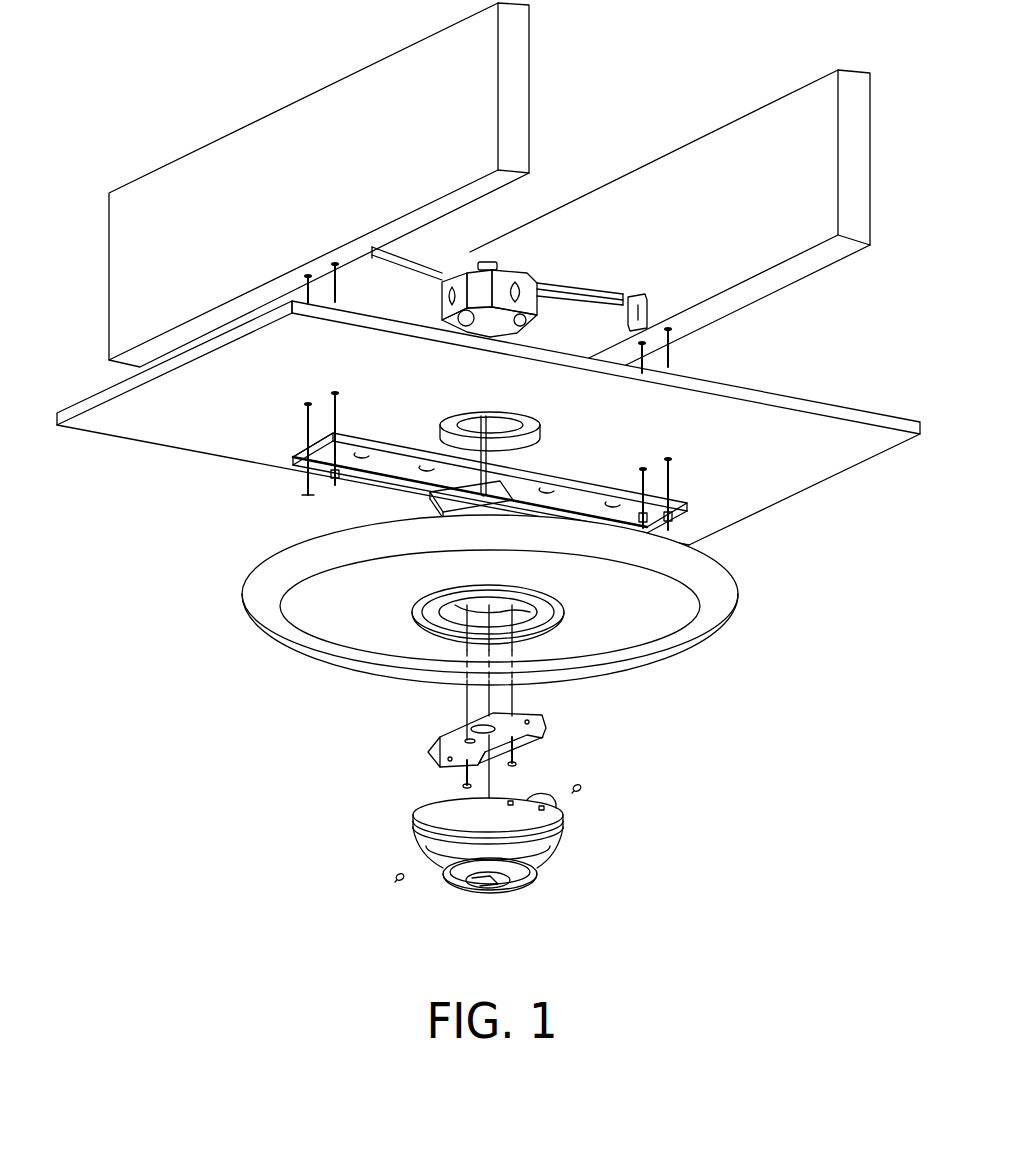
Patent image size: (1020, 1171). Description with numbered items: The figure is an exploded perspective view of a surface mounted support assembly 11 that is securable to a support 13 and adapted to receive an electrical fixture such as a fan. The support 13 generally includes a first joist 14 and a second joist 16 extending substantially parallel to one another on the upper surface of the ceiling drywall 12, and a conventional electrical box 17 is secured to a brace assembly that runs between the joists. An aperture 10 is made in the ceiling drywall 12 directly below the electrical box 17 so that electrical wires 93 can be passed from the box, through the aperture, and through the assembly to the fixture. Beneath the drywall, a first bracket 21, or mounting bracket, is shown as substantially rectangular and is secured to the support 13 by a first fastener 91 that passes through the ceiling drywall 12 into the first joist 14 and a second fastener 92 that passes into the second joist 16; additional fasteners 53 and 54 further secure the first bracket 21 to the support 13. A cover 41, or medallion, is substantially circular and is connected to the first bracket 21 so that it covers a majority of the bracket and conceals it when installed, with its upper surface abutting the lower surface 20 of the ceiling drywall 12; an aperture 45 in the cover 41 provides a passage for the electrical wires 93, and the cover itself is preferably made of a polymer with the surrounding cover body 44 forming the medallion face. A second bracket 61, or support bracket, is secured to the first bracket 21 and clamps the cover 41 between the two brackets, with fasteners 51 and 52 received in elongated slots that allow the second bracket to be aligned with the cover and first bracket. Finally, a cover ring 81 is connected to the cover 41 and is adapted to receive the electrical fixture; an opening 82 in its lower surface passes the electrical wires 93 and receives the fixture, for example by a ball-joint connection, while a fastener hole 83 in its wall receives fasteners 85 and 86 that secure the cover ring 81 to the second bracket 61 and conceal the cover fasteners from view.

The aperture 10 is at (527, 413).
The surface mounted support assembly 11 is at (264, 756).
The ceiling drywall 12 is at (851, 398).
The support 13 is at (730, 348).
The first joist 14 is at (530, 67).
The second joist 16 is at (750, 110).
The electrical box 17 is at (422, 298).
The lower surface 20 is at (807, 468).
The first bracket 21 is at (291, 444).
The cover 41 is at (528, 613).
The trim ring 44 is at (692, 640).
The aperture 45 is at (560, 612).
The fastener 51 is at (518, 755).
The fastener 52 is at (463, 777).
The additional fastener 53 is at (300, 485).
The additional fastener 54 is at (700, 539).
The second bracket 61 is at (562, 725).
The cover ring 81 is at (525, 866).
The opening 82 is at (503, 883).
The fastener hole 83 is at (543, 800).
The fastener 85 is at (584, 788).
The fastener 86 is at (395, 878).
The first fastener 91 is at (335, 487).
The second fastener 92 is at (673, 523).
The electrical wires 93 is at (525, 450).